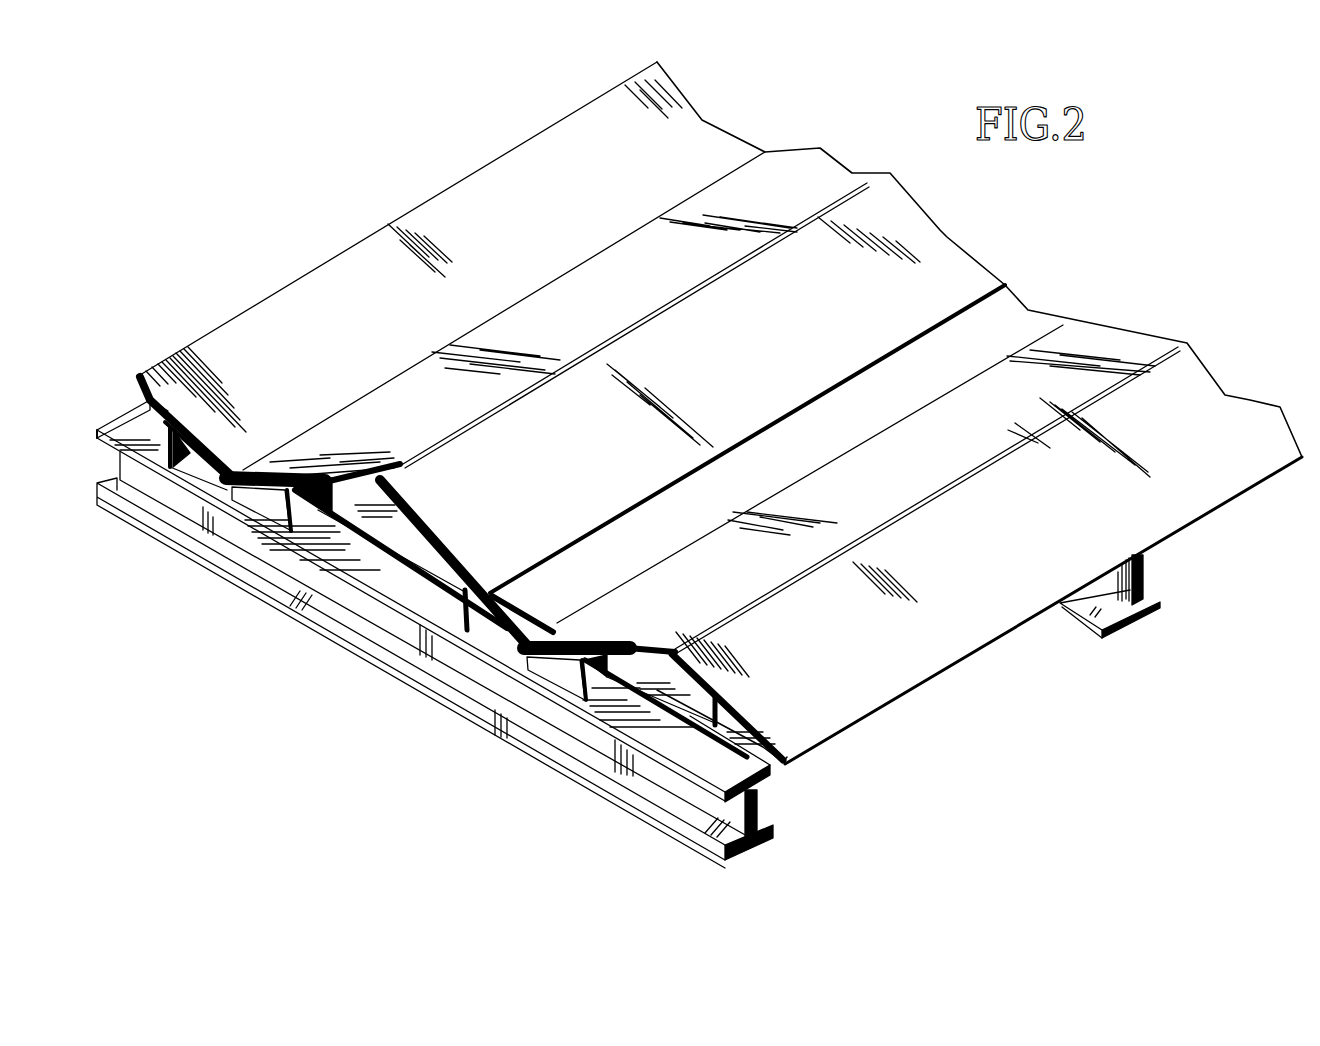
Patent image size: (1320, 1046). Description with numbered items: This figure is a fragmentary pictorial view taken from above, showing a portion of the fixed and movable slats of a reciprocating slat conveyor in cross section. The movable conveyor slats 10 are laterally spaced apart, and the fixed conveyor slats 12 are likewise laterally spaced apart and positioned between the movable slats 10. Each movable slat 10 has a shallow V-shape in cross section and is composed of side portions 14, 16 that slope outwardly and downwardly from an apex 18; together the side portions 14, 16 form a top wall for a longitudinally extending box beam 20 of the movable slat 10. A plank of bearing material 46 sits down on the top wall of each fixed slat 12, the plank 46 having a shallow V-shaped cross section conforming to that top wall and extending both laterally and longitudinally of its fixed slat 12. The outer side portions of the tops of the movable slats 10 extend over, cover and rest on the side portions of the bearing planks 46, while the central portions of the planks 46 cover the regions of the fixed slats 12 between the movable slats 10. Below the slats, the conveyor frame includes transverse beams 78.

The movable conveyor slat 10 is at (627, 317).
The fixed conveyor slat 12 is at (265, 505).
The side portion 14 is at (824, 178).
The side portion 16 is at (958, 257).
The apex 18 is at (723, 277).
The box beam 20 is at (377, 562).
The plank of bearing material 46 is at (484, 279).
The transverse beam 78 is at (733, 820).